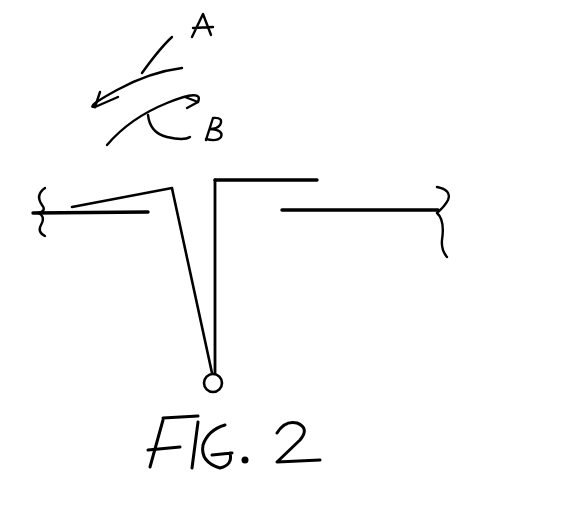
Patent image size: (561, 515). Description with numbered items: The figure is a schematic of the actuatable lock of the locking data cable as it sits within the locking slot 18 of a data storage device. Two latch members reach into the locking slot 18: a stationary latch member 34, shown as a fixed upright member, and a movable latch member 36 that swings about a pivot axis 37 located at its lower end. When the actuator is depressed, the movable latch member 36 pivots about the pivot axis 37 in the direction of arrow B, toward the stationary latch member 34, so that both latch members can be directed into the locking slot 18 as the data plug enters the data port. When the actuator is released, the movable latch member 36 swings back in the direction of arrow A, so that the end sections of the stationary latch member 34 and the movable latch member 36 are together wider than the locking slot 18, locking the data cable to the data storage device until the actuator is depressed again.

The locking slot 18 is at (262, 213).
The stationary latch member 34 is at (215, 287).
The movable latch member 36 is at (185, 262).
The pivot axis 37 is at (223, 380).